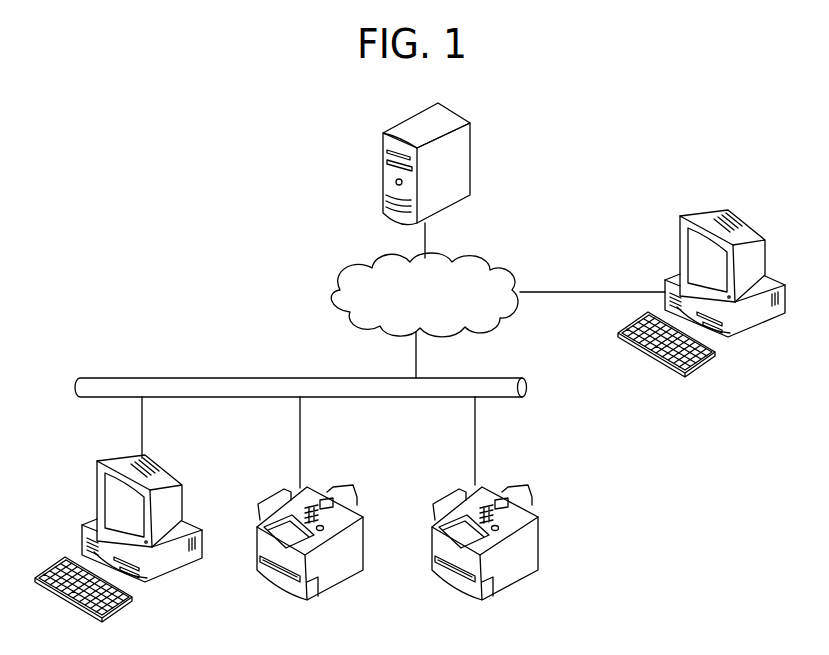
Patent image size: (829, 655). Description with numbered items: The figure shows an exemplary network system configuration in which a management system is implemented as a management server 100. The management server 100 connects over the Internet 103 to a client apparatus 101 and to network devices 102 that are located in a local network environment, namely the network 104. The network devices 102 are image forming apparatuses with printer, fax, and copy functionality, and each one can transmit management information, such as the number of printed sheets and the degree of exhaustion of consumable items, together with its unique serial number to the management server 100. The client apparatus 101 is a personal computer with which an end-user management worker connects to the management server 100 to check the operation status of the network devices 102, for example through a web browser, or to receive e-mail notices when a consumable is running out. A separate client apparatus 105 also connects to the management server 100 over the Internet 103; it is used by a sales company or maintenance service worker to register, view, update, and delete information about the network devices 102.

The management server 100 is at (383, 131).
The client apparatus 101 is at (163, 575).
The network devices 102 is at (348, 578).
The Internet 103 is at (486, 262).
The network 104 is at (510, 378).
The client apparatus 105 is at (733, 216).